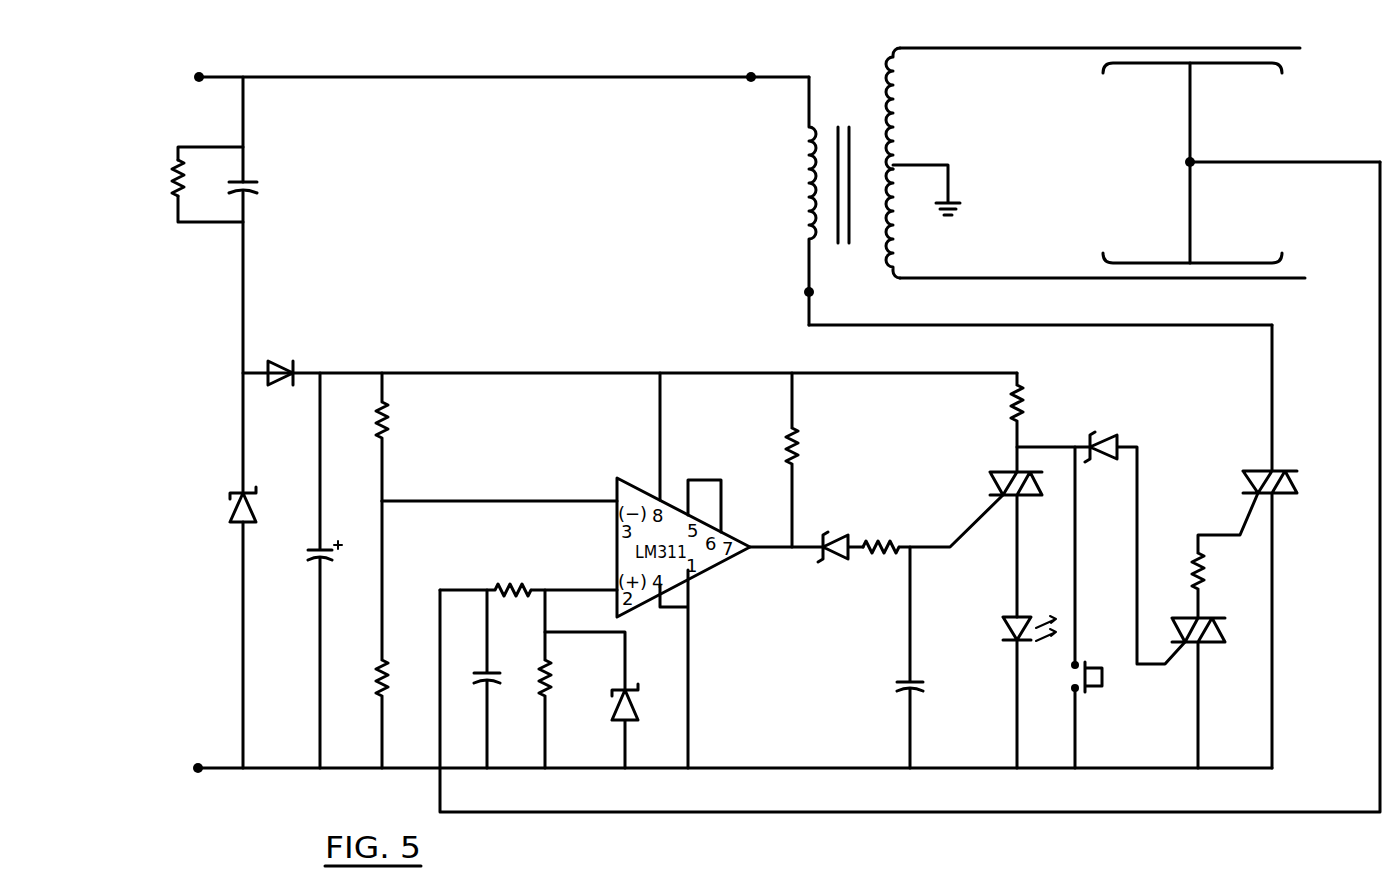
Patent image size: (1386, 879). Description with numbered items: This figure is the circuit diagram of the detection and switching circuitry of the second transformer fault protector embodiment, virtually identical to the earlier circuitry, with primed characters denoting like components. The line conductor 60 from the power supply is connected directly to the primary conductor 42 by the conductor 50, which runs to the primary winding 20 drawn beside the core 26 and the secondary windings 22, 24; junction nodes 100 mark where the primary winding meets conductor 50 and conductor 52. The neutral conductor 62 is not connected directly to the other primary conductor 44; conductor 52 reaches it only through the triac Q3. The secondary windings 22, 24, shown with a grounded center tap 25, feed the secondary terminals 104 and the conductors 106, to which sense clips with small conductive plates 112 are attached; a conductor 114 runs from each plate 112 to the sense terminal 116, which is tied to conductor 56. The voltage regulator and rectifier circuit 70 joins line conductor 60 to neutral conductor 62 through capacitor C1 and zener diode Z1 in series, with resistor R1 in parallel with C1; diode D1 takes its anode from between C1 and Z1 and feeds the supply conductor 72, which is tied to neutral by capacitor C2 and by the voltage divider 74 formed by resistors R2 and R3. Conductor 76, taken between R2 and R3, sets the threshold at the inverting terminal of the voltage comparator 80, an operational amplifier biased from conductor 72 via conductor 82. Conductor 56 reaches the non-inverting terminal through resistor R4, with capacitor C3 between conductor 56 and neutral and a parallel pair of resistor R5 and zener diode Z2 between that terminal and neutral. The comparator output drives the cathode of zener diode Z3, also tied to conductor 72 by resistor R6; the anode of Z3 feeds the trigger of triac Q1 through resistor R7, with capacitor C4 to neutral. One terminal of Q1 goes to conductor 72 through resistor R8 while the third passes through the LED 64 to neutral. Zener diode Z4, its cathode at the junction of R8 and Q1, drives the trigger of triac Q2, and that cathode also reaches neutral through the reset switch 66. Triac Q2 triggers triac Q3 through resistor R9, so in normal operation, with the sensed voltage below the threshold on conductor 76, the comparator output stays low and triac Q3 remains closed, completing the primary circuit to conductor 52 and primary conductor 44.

The transformer primary winding 20 is at (810, 176).
The transformer secondary winding 22 is at (898, 106).
The transformer secondary winding 24 is at (897, 241).
The secondary center tap to ground 25 is at (925, 162).
The transformer core 26 is at (853, 136).
The primary conductor 42 is at (808, 68).
The primary conductor 44 is at (812, 276).
The conductor 50 is at (488, 76).
The conductor 52 is at (975, 324).
The conductor 56 is at (714, 813).
The line conductor 60 is at (204, 84).
The neutral conductor 62 is at (228, 772).
The LED 64 is at (1003, 637).
The reset switch 66 is at (1103, 678).
The voltage regulator and rectifier circuit 70 is at (364, 313).
The supply conductor 72 is at (585, 372).
The voltage divider 74 is at (416, 472).
The conductor 76 is at (486, 500).
The voltage comparator 80 is at (677, 506).
The conductor 82 is at (665, 412).
The circuit nodes 100 is at (752, 84).
The transformer secondary terminals 104 is at (1049, 47).
The conductor 106 is at (1193, 45).
The conductive plate 112 is at (1225, 67).
The conductor 114 is at (1192, 148).
The sense terminal 116 is at (1186, 165).
The resistor R1 is at (196, 176).
The capacitor C1 is at (256, 190).
The zener diode Z1 is at (240, 510).
The diode D1 is at (292, 361).
The capacitor C2 is at (330, 560).
The resistor R2 is at (385, 428).
The resistor R3 is at (379, 680).
The resistor R4 is at (514, 588).
The capacitor C3 is at (489, 688).
The resistor R5 is at (562, 668).
The zener diode Z2 is at (636, 712).
The resistor R6 is at (797, 438).
The zener diode Z3 is at (838, 528).
The resistor R7 is at (885, 541).
The capacitor C4 is at (914, 692).
The resistor R8 is at (1021, 412).
The zener diode Z4 is at (1112, 442).
The triac Q1 is at (1027, 544).
The triac Q2 is at (1208, 693).
The triac Q3 is at (1290, 495).
The resistor R9 is at (1204, 575).